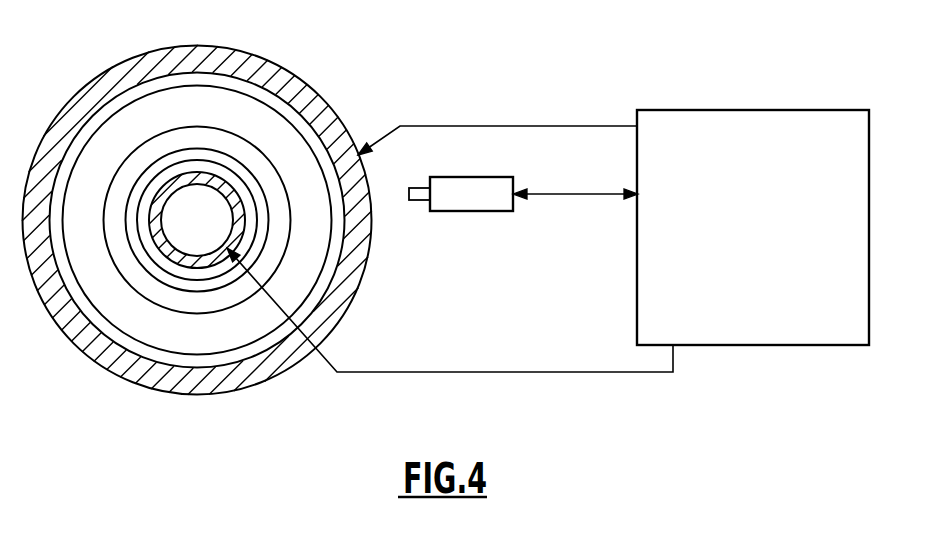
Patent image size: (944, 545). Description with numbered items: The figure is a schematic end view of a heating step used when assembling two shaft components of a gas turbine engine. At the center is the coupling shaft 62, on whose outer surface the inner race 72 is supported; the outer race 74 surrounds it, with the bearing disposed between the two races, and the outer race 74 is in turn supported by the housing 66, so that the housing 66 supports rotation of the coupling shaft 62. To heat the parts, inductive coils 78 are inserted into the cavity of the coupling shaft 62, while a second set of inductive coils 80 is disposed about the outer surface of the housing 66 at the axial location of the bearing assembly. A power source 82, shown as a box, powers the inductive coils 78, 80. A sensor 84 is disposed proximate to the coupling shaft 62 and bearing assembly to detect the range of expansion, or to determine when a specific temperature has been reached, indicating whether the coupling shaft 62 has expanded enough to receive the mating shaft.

The coupling shaft 62 is at (112, 358).
The housing 66 is at (250, 92).
The inner race 72 is at (205, 140).
The outer race 74 is at (167, 117).
The inductive coils 78 is at (201, 262).
The second set of inductive coils 80 is at (323, 115).
The power source 82 is at (777, 127).
The sensor 84 is at (479, 197).